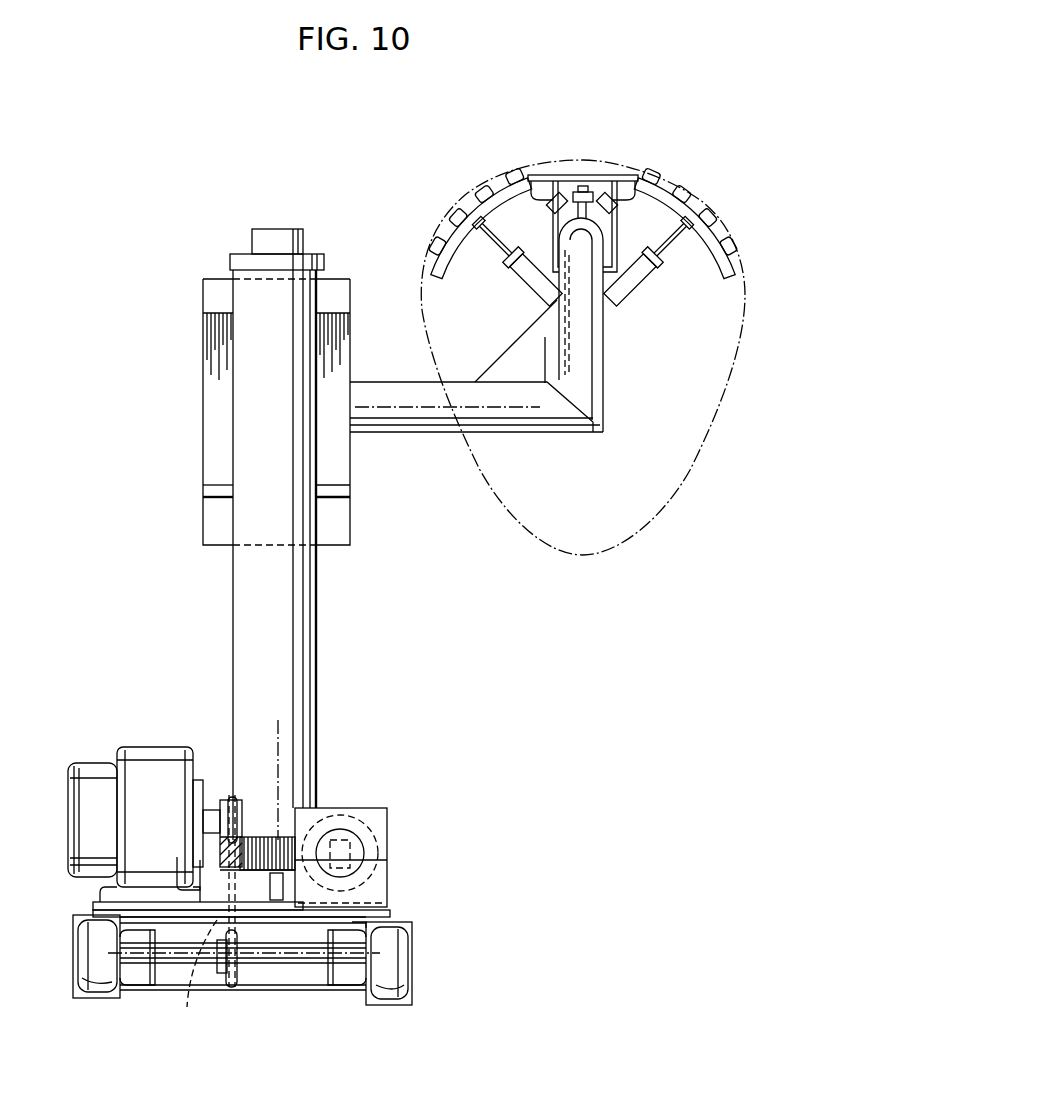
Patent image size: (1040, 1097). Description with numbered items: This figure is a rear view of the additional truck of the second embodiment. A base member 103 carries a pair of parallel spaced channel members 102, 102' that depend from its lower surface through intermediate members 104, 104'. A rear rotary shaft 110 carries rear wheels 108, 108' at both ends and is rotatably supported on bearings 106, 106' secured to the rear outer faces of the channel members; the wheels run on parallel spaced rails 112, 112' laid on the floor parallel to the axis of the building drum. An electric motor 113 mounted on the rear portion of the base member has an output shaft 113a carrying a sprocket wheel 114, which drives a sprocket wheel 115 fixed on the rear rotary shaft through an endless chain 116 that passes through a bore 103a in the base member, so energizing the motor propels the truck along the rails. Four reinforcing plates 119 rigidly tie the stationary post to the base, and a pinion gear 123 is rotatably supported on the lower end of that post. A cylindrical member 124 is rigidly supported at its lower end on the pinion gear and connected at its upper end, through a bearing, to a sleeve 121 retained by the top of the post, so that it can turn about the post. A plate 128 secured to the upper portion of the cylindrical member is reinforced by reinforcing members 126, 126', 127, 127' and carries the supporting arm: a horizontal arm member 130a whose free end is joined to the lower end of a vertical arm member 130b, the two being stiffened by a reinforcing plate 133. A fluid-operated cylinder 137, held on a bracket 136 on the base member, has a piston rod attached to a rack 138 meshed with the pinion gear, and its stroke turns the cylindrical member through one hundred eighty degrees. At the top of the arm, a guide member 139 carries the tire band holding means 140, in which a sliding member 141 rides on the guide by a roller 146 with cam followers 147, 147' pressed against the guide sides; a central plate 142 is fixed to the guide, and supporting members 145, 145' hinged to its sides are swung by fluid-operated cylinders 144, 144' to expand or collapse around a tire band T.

The channel member 102 is at (144, 996).
The channel member 102' is at (329, 996).
The base member 103 is at (390, 913).
The bore 103a is at (185, 976).
The intermediate member 104 is at (198, 897).
The intermediate member 104' is at (410, 937).
The bearing 106 is at (121, 981).
The bearing 106' is at (363, 981).
The rear wheel 108 is at (72, 956).
The rear wheel 108' is at (419, 963).
The rear rotary shaft 110 is at (283, 968).
The rail 112 is at (68, 956).
The rail 112' is at (426, 965).
The electric motor 113 is at (157, 748).
The output shaft 113a is at (208, 808).
The sprocket wheel 114 is at (223, 805).
The sprocket wheel 115 is at (222, 980).
The endless chain 116 is at (227, 883).
The reinforcing plate 119 is at (274, 922).
The sleeve 121 is at (276, 236).
The pinion gear 123 is at (262, 837).
The cylindrical member 124 is at (316, 638).
The reinforcing member 126 is at (195, 329).
The reinforcing member 126' is at (361, 330).
The reinforcing member 127 is at (190, 506).
The reinforcing member 127' is at (362, 509).
The plate 128 is at (210, 425).
The horizontal arm member 130a is at (536, 432).
The vertical arm member 130b is at (604, 372).
The reinforcing plate 133 is at (508, 350).
The bracket 136 is at (387, 885).
The fluid-operated cylinder 137 is at (362, 808).
The rack 138 is at (388, 837).
The guide member 139 is at (588, 190).
The tire band holding means 140 is at (521, 151).
The sliding member 141 is at (572, 190).
The central plate 142 is at (625, 195).
The fluid-operated cylinder 144 is at (649, 267).
The fluid-operated cylinder 144' is at (516, 265).
The supporting member 145 is at (689, 216).
The supporting member 145' is at (479, 213).
The roller 146 is at (580, 192).
The cam follower 147 is at (635, 211).
The cam follower 147' is at (535, 210).
The tire band T is at (655, 530).